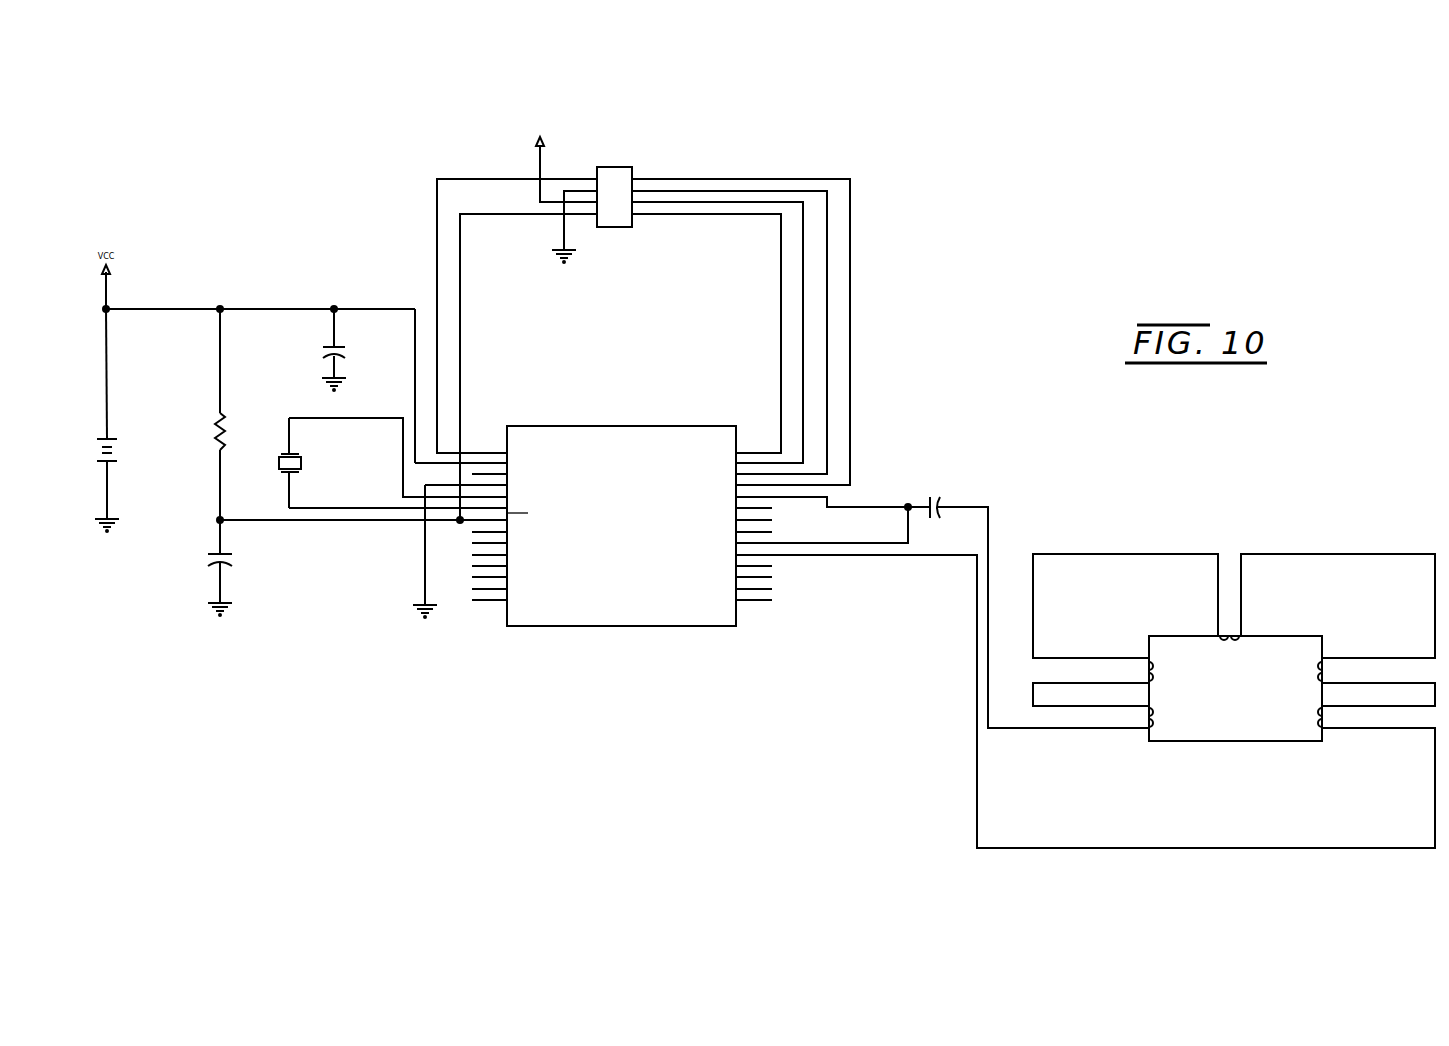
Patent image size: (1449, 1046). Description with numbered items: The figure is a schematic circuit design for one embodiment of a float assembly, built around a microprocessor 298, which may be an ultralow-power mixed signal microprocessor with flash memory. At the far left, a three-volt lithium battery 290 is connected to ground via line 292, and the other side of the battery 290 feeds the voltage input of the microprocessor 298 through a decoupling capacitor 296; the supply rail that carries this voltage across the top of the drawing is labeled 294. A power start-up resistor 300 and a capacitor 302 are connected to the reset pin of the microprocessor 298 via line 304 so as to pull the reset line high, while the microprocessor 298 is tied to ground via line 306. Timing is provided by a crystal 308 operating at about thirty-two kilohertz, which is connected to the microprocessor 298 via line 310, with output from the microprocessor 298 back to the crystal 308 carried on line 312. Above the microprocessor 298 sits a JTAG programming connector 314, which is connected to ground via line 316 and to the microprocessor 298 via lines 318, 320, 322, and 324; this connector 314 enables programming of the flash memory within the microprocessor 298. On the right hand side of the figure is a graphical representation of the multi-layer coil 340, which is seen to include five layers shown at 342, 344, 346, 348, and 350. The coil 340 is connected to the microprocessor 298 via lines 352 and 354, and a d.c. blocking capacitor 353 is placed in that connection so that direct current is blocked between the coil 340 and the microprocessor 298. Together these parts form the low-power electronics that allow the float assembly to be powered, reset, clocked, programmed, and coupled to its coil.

The lithium battery 290 is at (116, 420).
The line 292 is at (107, 484).
The power supply line 294 is at (152, 308).
The decoupling capacitor 296 is at (330, 345).
The microprocessor 298 is at (613, 628).
The power start-up resistor 300 is at (218, 430).
The capacitor 302 is at (218, 550).
The line 304 is at (268, 521).
The line 306 is at (425, 568).
The crystal 308 is at (290, 470).
The line 310 is at (326, 506).
The line 312 is at (350, 415).
The JTAG programming connector 314 is at (610, 166).
The line 316 is at (564, 230).
The line 318 is at (781, 280).
The line 320 is at (770, 202).
The line 322 is at (827, 247).
The line 324 is at (850, 283).
The multi-layer coil 340 is at (1283, 527).
The coil layer 342 is at (1143, 735).
The coil layer 344 is at (1145, 652).
The coil layer 346 is at (1244, 628).
The coil layer 348 is at (1327, 652).
The coil layer 350 is at (1327, 738).
The line 352 is at (977, 790).
The d.c. blocking capacitor 353 is at (920, 497).
The line 354 is at (990, 515).